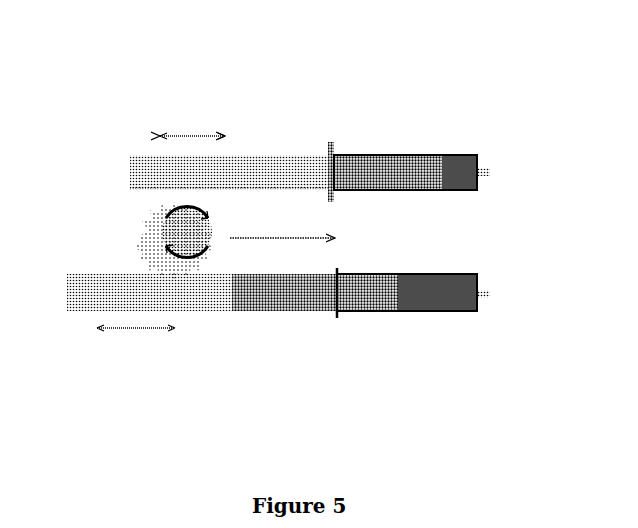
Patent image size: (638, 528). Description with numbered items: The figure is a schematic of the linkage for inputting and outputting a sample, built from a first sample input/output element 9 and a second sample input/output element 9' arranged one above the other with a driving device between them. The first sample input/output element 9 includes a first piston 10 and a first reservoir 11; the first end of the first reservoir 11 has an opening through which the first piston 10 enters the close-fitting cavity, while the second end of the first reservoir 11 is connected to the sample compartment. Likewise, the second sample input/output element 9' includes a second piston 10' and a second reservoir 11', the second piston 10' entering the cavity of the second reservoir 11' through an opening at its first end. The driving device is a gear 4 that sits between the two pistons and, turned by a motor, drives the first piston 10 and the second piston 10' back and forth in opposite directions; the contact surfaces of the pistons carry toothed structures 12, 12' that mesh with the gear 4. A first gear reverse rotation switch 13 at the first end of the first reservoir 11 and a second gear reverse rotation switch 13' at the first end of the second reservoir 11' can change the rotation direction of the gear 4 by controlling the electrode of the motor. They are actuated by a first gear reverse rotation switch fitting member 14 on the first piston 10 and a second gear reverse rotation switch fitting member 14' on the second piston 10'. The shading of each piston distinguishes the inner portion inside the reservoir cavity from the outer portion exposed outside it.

The gear 4 is at (291, 238).
The first sample input/output element 9 is at (330, 111).
The second sample input/output element 9' is at (278, 358).
The first piston 10 is at (229, 133).
The second piston 10' is at (149, 338).
The first reservoir 11 is at (486, 150).
The second reservoir 11' is at (444, 320).
The toothed structure 12 is at (133, 224).
The toothed structure 12' is at (135, 240).
The first gear reverse rotation switch 13 is at (405, 139).
The second gear reverse rotation switch 13' is at (407, 328).
The first gear reverse rotation switch fitting member 14 is at (392, 120).
The second gear reverse rotation switch fitting member 14' is at (284, 356).